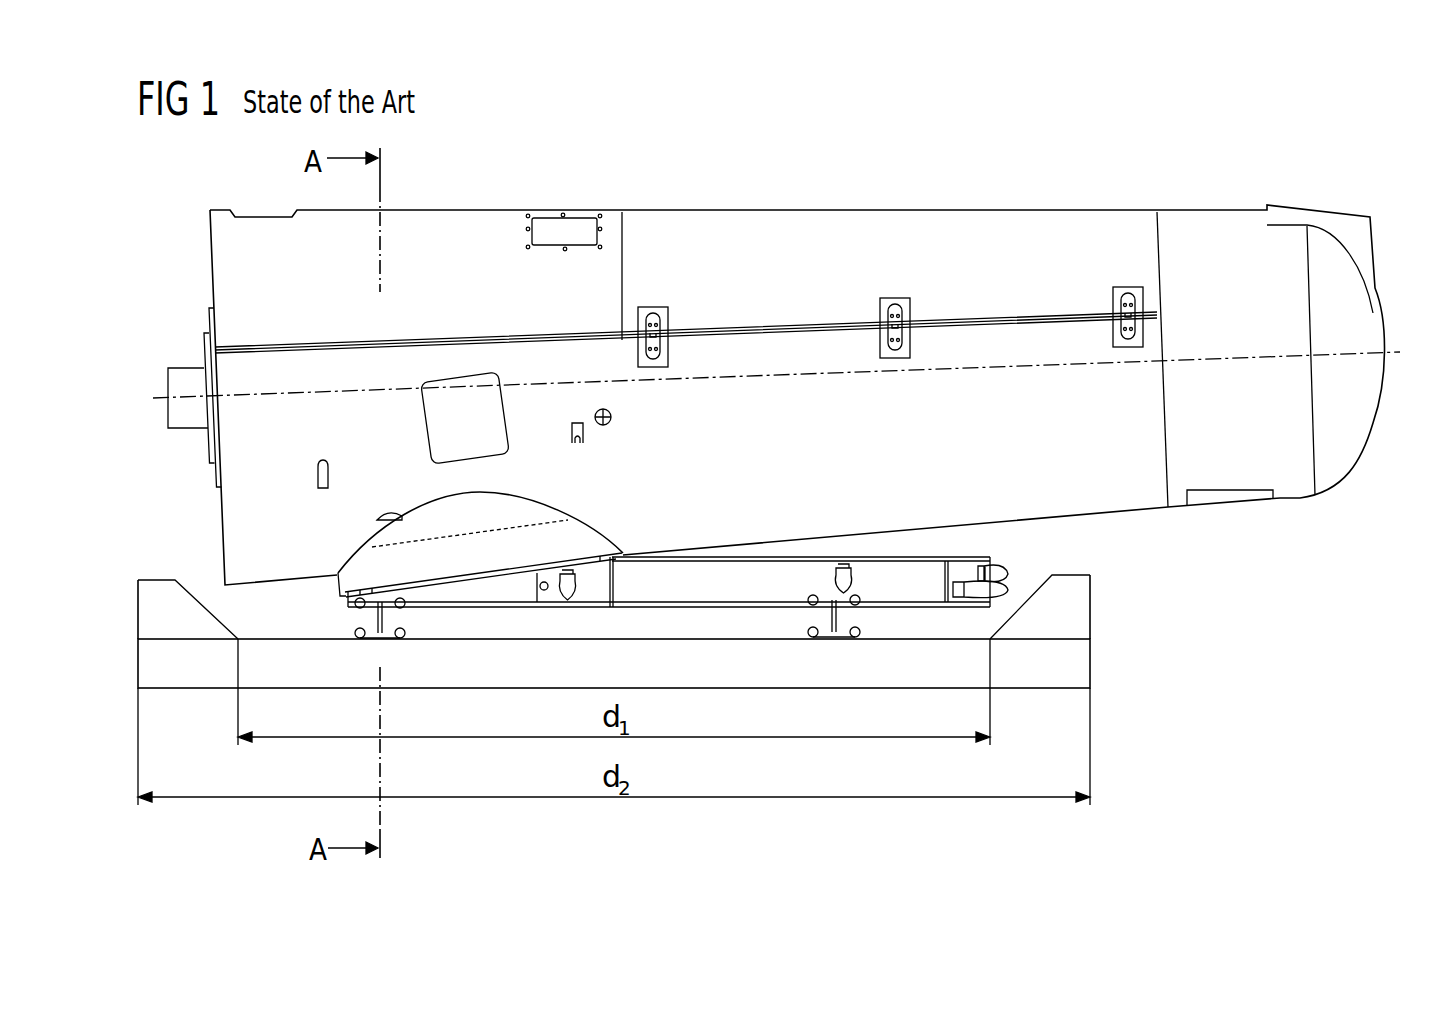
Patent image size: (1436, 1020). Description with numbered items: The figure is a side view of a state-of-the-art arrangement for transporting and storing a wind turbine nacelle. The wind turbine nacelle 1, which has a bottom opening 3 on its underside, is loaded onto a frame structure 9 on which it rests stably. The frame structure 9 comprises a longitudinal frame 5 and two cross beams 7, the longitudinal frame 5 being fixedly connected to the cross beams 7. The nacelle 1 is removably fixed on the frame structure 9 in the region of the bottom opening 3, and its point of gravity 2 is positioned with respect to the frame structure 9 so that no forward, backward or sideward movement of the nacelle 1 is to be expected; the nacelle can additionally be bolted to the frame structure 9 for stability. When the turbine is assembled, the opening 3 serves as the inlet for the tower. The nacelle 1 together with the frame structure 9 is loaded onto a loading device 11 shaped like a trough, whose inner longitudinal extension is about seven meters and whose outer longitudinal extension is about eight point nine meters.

The wind turbine nacelle 1 is at (1022, 158).
The point of gravity 2 is at (611, 423).
The bottom opening 3 is at (358, 566).
The longitudinal frame 5 is at (918, 560).
The cross beam 7 is at (837, 615).
The frame structure 9 is at (1100, 552).
The loading device 11 is at (1092, 663).